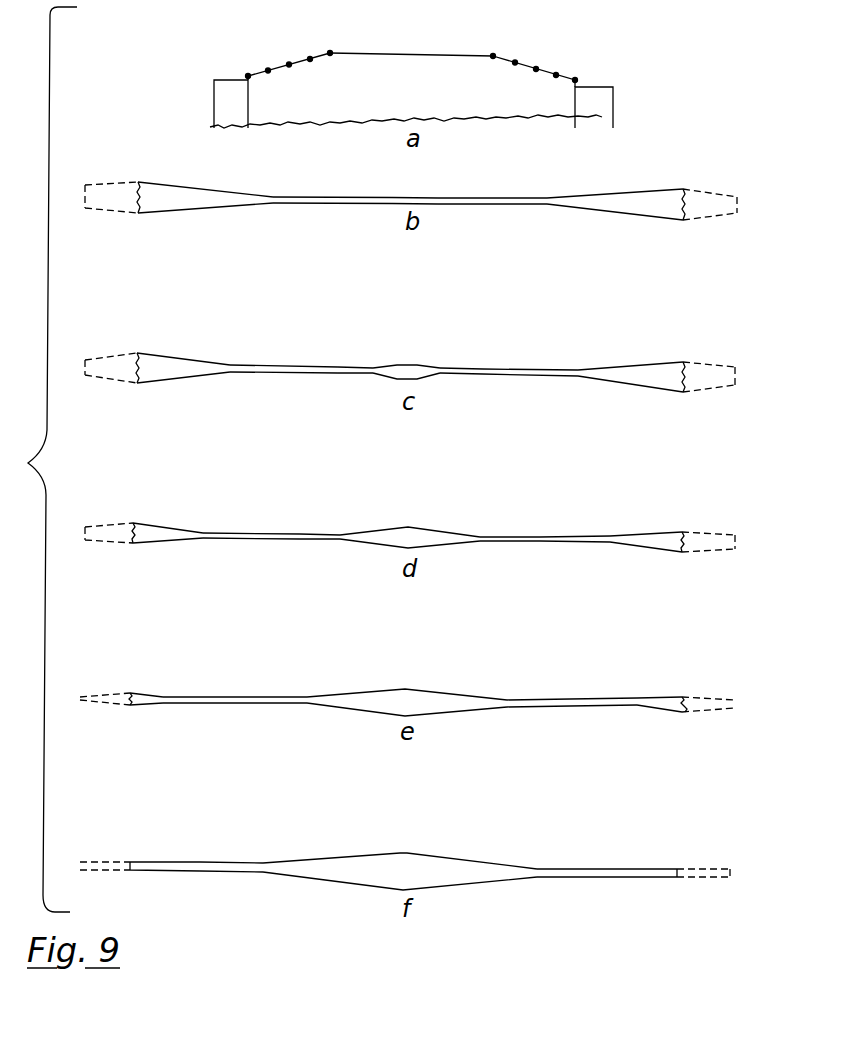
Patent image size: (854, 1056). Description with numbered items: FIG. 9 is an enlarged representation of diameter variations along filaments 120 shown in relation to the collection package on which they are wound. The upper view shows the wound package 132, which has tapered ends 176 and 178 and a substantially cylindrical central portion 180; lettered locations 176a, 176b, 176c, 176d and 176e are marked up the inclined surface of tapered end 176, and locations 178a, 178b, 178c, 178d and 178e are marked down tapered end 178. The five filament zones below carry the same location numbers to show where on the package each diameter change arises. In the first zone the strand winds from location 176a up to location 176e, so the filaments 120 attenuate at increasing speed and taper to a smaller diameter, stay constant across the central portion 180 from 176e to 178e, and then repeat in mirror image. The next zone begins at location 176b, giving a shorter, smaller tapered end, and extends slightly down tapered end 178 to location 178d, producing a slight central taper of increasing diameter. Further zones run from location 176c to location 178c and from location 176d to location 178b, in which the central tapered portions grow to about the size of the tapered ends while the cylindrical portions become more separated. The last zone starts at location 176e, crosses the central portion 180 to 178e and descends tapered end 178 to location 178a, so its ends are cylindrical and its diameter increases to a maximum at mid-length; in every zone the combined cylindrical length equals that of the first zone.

The filaments 120 is at (208, 184).
The wound package 132 is at (483, 20).
The tapered end 176 is at (282, 58).
The tapered end 178 is at (550, 70).
The central portion 180 is at (435, 55).
The location 176a is at (411, 189).
The location 176b is at (410, 360).
The location 176c is at (410, 525).
The location 176d is at (407, 689).
The location 176e is at (405, 524).
The location 178a is at (400, 859).
The location 178b is at (407, 689).
The location 178c is at (410, 523).
The location 178d is at (406, 358).
The location 178e is at (400, 524).